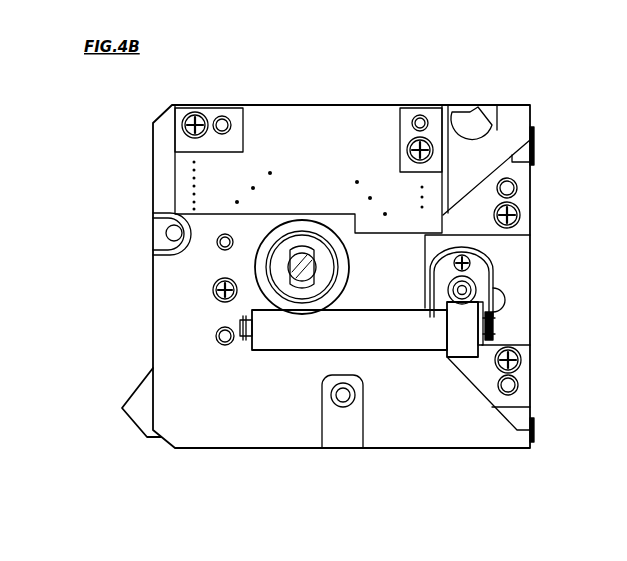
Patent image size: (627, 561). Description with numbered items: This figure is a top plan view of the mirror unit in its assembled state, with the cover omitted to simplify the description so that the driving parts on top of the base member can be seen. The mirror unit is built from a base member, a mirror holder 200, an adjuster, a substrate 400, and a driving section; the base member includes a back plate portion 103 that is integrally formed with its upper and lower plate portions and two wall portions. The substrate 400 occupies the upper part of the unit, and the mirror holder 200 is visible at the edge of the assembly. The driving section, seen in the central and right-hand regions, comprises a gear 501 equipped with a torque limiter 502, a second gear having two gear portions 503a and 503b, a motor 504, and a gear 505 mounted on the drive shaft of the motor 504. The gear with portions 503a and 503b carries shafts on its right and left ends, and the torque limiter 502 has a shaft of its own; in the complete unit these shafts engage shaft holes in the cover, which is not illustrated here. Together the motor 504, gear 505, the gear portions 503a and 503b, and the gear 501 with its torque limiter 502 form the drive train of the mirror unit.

The back plate portion 103 is at (513, 325).
The mirror holder 200 is at (137, 417).
The substrate 400 is at (378, 128).
The gear 501 is at (259, 246).
The torque limiter 502 is at (302, 240).
The gear portion 503a is at (456, 357).
The gear portion 503b is at (285, 350).
The motor 504 is at (493, 255).
The gear 505 is at (478, 292).